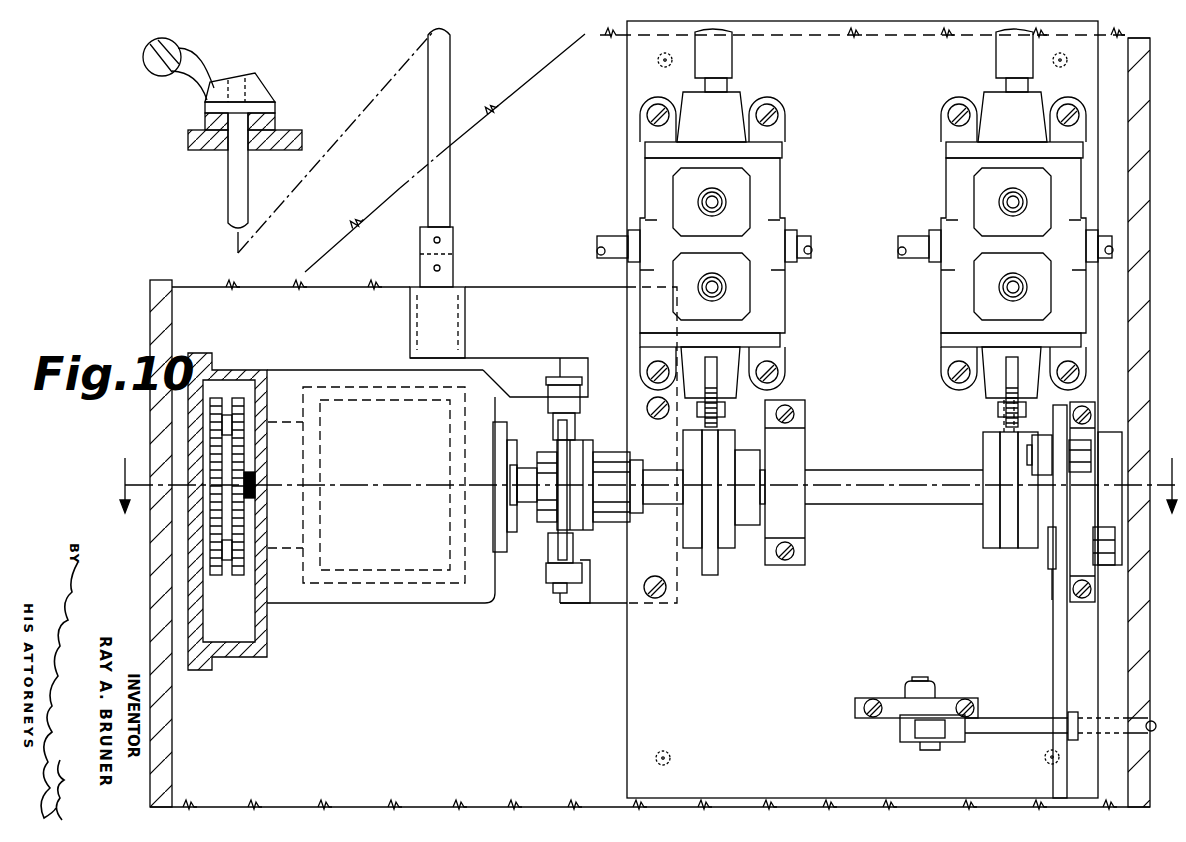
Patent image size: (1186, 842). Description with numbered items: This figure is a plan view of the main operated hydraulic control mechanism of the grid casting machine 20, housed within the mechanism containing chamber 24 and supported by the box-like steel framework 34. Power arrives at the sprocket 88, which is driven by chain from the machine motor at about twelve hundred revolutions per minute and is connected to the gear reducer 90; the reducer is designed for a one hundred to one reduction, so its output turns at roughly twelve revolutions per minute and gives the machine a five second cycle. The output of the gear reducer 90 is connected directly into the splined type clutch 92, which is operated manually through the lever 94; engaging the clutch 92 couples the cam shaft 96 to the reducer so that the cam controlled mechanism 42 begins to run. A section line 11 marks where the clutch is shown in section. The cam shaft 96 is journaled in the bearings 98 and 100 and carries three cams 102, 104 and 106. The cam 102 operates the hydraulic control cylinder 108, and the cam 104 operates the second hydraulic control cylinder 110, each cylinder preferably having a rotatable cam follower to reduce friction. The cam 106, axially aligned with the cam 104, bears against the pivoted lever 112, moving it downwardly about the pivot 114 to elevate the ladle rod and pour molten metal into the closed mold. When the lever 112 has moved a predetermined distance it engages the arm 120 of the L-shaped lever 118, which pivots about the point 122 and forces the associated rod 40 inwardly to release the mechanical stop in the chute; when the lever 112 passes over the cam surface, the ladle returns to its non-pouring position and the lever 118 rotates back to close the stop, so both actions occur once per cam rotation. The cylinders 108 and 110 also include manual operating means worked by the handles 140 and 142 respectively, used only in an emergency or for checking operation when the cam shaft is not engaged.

The section line 11 is at (649, 504).
The grid casting machine 20 is at (1146, 636).
The mechanism containing chamber 24 is at (552, 63).
The steel framework 34 is at (1147, 658).
The lever 40 is at (1153, 732).
The cam controlled mechanism 42 is at (951, 550).
The sprocket 88 is at (236, 396).
The gear reducer 90 is at (355, 604).
The splined type clutch 92 is at (604, 523).
The lever 94 is at (270, 92).
The cam shaft 96 is at (845, 505).
The bearing 98 is at (770, 568).
The bearing 100 is at (1112, 440).
The cam 102 is at (709, 576).
The cam 104 is at (1012, 545).
The cam 106 is at (1033, 549).
The hydraulic control cylinder 108 is at (784, 299).
The hydraulic control cylinder 110 is at (945, 300).
The pivoted lever 112 is at (1054, 645).
The pivot 114 is at (1050, 570).
The L-shaped lever 118 is at (1018, 738).
The arm 120 is at (1020, 718).
The pivot point 122 is at (921, 682).
The handle 140 is at (732, 62).
The handle 142 is at (998, 60).